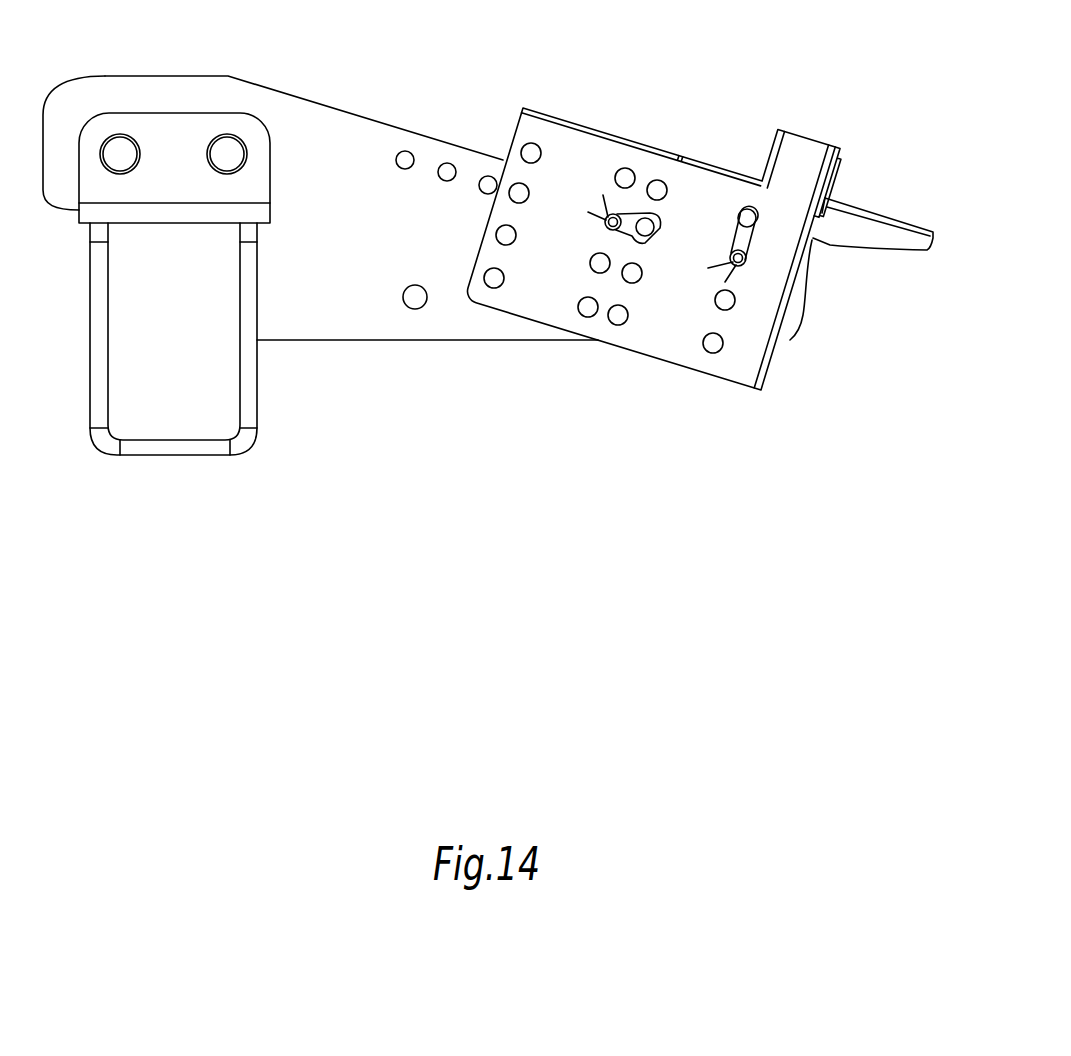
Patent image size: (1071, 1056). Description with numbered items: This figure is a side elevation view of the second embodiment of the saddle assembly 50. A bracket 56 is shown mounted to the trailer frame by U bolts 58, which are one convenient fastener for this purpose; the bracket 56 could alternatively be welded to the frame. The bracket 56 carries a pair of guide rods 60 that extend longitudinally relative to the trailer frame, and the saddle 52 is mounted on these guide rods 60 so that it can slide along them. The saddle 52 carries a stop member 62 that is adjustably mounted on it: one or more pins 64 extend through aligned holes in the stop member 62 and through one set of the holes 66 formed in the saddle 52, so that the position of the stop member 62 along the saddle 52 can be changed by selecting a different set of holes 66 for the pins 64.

The saddle assembly 50 is at (660, 58).
The saddle 52 is at (359, 295).
The bracket 56 is at (250, 183).
The U bolts 58 is at (98, 356).
The guide rods 60 is at (118, 148).
The stop member 62 is at (644, 146).
The pins 64 is at (607, 222).
The holes 66 is at (405, 151).